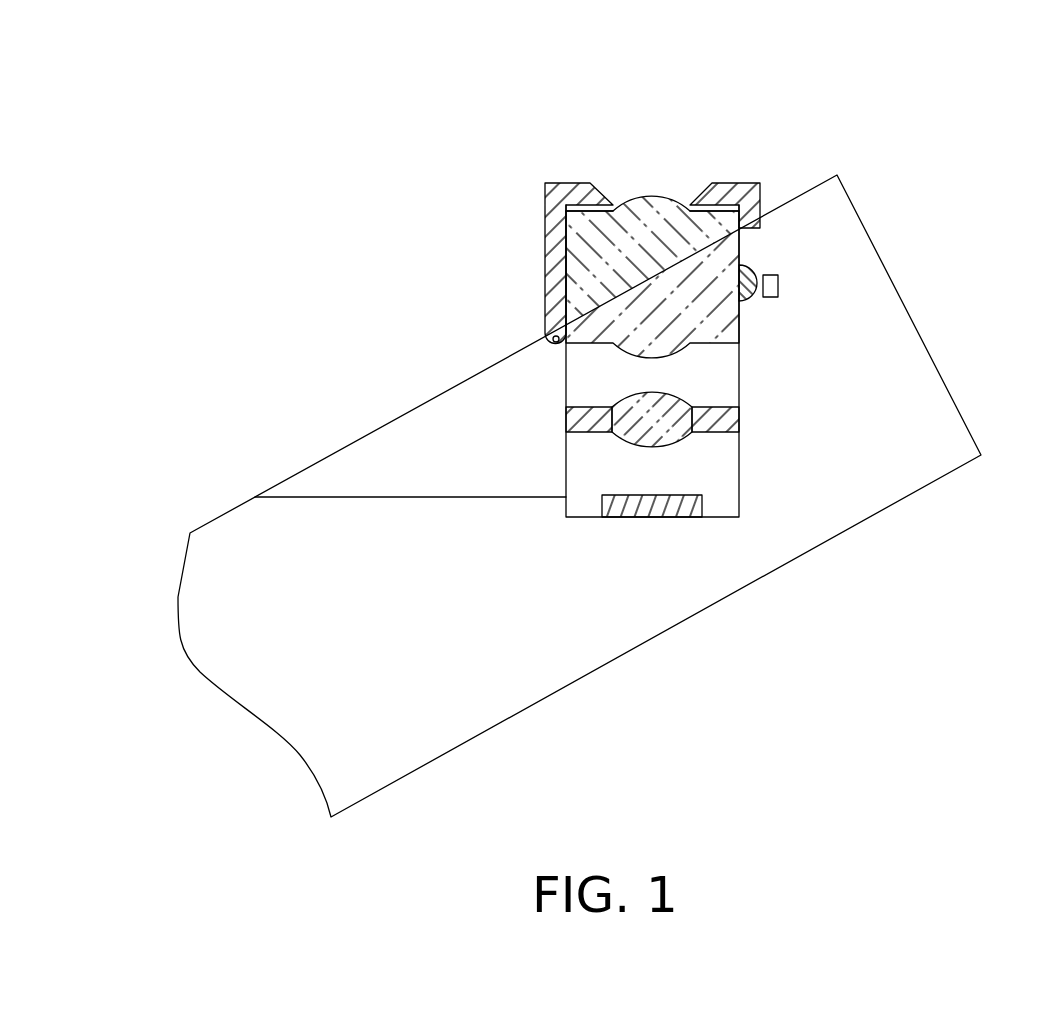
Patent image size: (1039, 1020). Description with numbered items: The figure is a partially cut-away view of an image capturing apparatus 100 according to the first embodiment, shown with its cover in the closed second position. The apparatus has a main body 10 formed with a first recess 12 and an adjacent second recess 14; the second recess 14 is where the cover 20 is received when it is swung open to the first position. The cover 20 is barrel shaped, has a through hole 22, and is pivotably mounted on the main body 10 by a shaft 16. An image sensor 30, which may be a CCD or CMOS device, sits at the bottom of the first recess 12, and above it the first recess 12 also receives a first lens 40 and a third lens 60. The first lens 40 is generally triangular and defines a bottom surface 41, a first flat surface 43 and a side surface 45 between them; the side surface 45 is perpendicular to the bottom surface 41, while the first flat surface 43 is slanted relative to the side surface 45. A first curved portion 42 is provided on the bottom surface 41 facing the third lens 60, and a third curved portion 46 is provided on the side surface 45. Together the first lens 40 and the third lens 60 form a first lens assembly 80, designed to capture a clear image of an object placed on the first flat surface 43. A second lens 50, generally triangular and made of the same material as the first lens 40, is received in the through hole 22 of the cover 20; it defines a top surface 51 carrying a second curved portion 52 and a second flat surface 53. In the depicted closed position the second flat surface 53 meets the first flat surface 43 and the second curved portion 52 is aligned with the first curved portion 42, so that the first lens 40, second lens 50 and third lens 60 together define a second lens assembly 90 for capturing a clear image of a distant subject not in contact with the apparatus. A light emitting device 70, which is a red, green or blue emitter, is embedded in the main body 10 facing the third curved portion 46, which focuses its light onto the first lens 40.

The image capturing apparatus 100 is at (694, 45).
The main body 10 is at (517, 672).
The first recess 12 is at (720, 473).
The second recess 14 is at (407, 463).
The shaft 16 is at (554, 335).
The cover 20 is at (547, 195).
The through hole 22 is at (723, 198).
The image sensor 30 is at (684, 508).
The first lens 40 is at (640, 308).
The bottom surface 41 is at (721, 344).
The first curved portion 42 is at (673, 357).
The first flat surface 43 is at (677, 256).
The side surface 45 is at (740, 322).
The third curved portion 46 is at (752, 270).
The second lens 50 is at (607, 250).
The top surface 51 is at (579, 199).
The second curved portion 52 is at (651, 197).
The second flat surface 53 is at (727, 239).
The third lens 60 is at (603, 420).
The light emitting device 70 is at (778, 282).
The first lens assembly 80 is at (408, 250).
The second lens assembly 90 is at (373, 185).